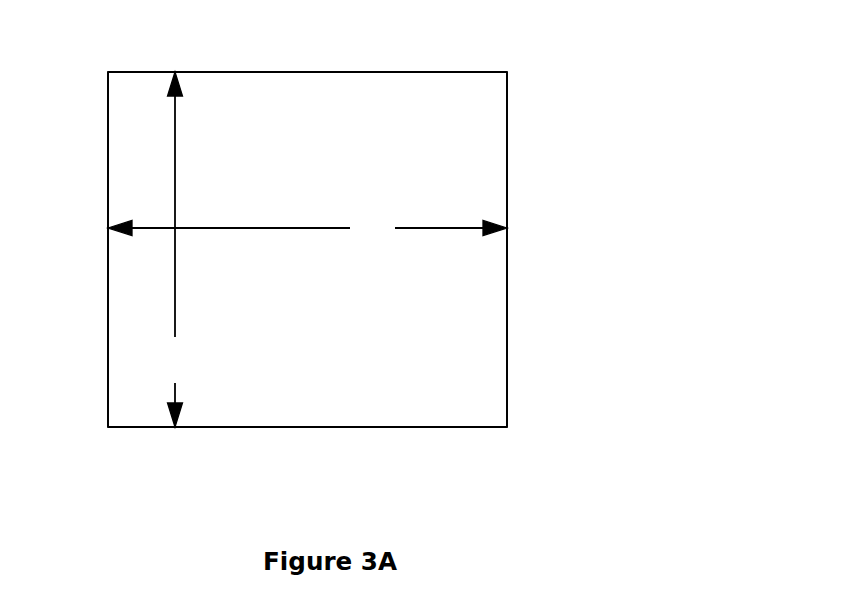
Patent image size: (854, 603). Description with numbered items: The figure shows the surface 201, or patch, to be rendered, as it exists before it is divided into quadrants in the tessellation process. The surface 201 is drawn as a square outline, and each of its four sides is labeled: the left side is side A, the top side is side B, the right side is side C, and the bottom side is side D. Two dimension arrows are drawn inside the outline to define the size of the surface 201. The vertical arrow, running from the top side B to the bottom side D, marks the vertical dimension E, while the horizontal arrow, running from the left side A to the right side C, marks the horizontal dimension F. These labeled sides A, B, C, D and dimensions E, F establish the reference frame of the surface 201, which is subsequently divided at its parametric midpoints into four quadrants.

The surface 201 is at (507, 72).
The side of the surface A is at (70, 249).
The side of the surface B is at (307, 44).
The side of the surface C is at (534, 249).
The side of the surface D is at (307, 448).
The vertical dimension of the surface E is at (175, 249).
The horizontal dimension of the surface F is at (307, 228).